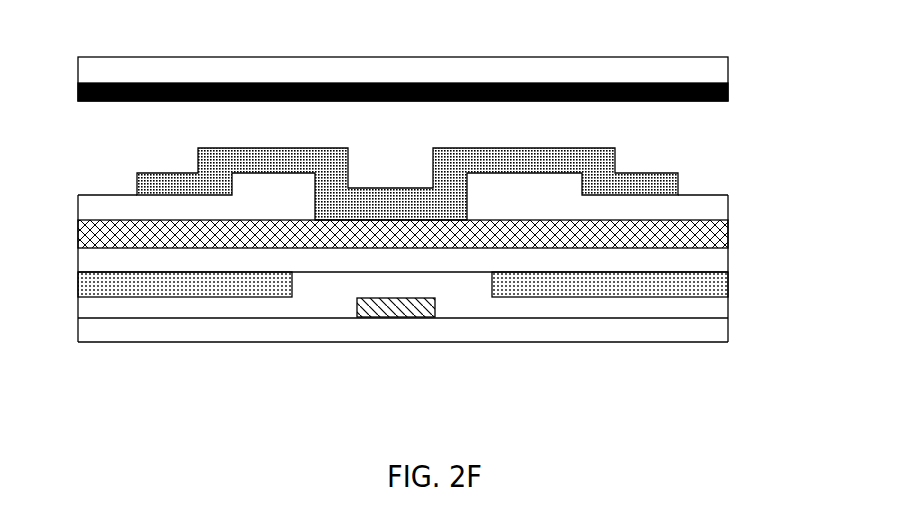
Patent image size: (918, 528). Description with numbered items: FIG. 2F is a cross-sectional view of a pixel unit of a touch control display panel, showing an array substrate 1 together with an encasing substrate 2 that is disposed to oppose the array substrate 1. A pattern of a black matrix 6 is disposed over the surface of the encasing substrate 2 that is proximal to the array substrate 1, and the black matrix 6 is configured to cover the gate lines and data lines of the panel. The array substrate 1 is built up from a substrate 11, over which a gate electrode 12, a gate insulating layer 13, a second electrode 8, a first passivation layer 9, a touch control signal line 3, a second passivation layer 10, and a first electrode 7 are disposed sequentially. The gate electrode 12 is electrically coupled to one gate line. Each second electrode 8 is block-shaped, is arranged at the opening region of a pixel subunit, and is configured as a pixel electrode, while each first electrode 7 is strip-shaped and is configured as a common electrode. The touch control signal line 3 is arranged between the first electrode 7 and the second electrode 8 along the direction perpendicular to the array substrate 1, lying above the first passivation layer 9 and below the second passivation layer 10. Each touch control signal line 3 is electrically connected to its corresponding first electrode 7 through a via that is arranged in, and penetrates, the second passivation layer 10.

The array substrate 1 is at (439, 233).
The encasing substrate 2 is at (427, 53).
The touch control signal line 3 is at (697, 233).
The black matrix 6 is at (729, 85).
The first electrode 7 is at (597, 166).
The second electrode 8 is at (695, 288).
The first passivation layer 9 is at (687, 262).
The second passivation layer 10 is at (693, 208).
The substrate 11 is at (695, 329).
The gate electrode 12 is at (420, 308).
The gate insulating layer 13 is at (695, 310).